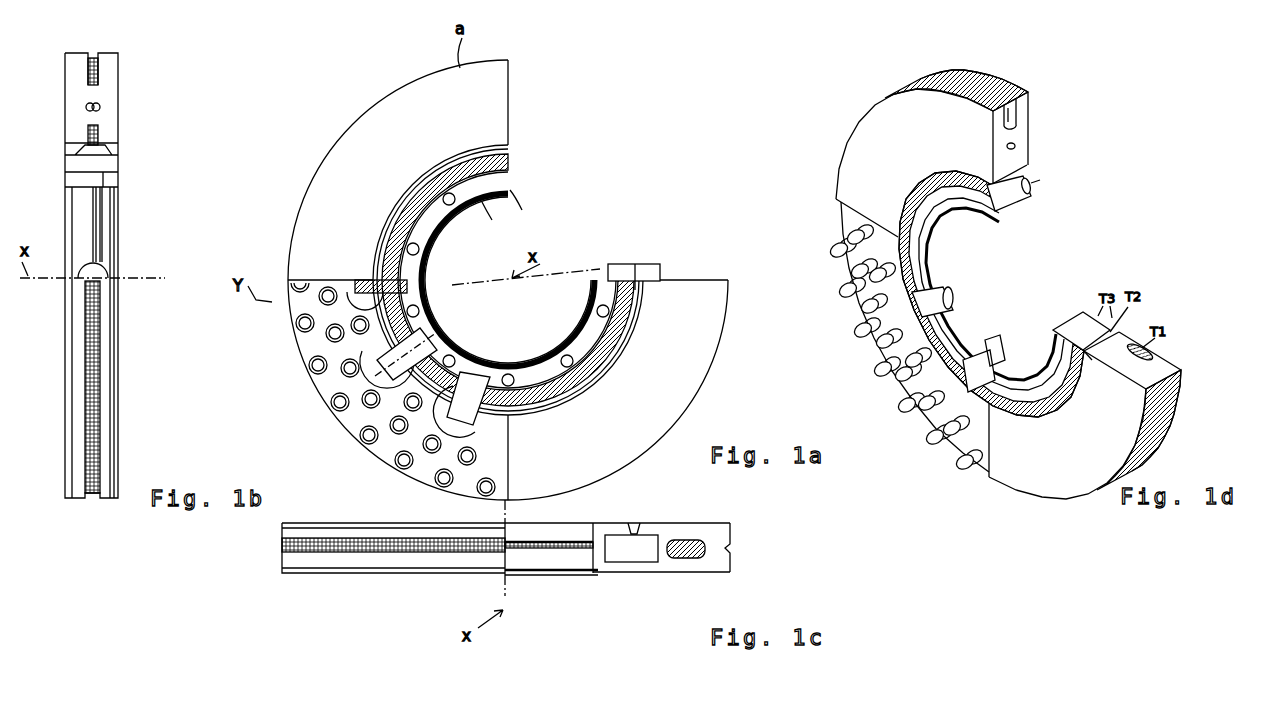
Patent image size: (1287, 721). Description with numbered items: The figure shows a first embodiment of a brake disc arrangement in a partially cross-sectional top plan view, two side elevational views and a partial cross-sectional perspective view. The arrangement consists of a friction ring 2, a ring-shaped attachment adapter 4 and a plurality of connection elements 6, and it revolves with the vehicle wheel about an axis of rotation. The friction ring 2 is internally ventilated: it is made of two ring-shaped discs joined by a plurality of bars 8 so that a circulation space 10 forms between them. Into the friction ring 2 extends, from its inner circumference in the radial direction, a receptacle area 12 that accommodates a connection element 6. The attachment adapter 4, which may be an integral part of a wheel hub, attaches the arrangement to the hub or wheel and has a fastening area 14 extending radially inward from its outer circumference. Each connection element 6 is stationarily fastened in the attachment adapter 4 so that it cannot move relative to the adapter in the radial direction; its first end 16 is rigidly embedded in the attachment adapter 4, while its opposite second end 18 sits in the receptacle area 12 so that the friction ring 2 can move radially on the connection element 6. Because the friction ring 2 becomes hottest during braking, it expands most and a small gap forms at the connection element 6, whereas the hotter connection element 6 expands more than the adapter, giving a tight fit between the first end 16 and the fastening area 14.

In FIG. 1B, the friction ring 2 is at (108, 112).
In FIG. 1A, the friction ring 2 is at (440, 345).
In FIG. 1C, the friction ring 2 is at (316, 562).
In FIG. 1D, the friction ring 2 is at (864, 108).
In FIG. 1B, the attachment adapter 4 is at (105, 167).
In FIG. 1A, the attachment adapter 4 is at (512, 150).
In FIG. 1C, the attachment adapter 4 is at (567, 565).
In FIG. 1D, the attachment adapter 4 is at (1040, 181).
In FIG. 1B, the connection element 6 is at (110, 276).
In FIG. 1A, the connection element 6 is at (633, 270).
In FIG. 1C, the connection element 6 is at (637, 560).
In FIG. 1D, the connection element 6 is at (930, 375).
In FIG. 1A, the bar 8 is at (325, 352).
In FIG. 1A, the circulation space 10 is at (323, 384).
In FIG. 1D, the circulation space 10 is at (906, 347).
In FIG. 1C, the receptacle area 12 is at (652, 530).
In FIG. 1D, the receptacle area 12 is at (1093, 360).
In FIG. 1C, the fastening area 14 is at (615, 533).
In FIG. 1D, the first end 16 is at (993, 357).
In FIG. 1D, the second end 18 is at (985, 375).